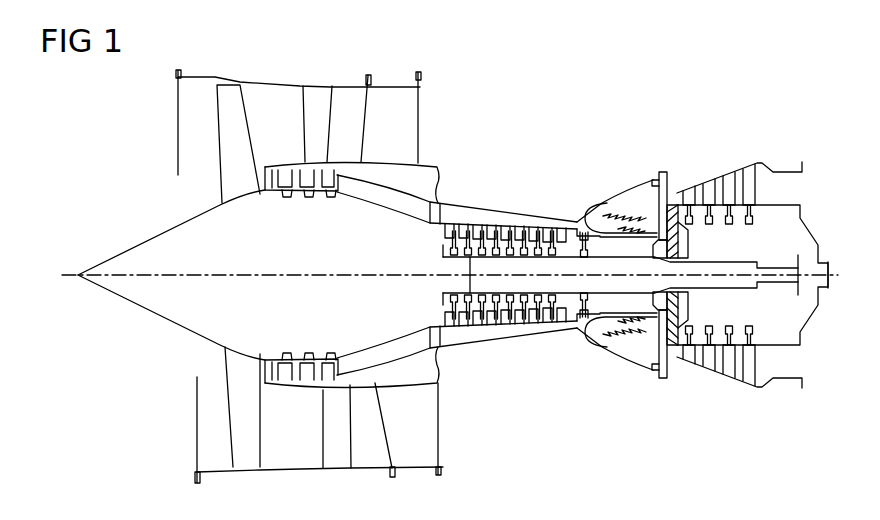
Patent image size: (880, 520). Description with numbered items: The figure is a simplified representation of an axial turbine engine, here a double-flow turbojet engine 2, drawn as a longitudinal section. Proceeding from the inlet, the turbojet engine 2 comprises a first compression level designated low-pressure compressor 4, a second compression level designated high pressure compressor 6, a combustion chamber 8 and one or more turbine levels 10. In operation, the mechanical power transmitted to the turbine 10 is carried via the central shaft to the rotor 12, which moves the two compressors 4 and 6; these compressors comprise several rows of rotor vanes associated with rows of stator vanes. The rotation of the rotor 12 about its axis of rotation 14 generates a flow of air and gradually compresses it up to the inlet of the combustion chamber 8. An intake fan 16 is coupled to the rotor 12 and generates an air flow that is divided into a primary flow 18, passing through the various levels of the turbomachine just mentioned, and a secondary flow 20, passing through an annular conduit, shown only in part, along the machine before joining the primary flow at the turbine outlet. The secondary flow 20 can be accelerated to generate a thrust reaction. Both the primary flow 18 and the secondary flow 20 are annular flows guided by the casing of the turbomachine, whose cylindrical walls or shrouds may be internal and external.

The turbojet engine 2 is at (609, 106).
The low-pressure compressor 4 is at (284, 196).
The high pressure compressor 6 is at (479, 210).
The combustion chamber 8 is at (602, 203).
The turbine 10 is at (733, 190).
The rotor 12 is at (151, 303).
The axis of rotation 14 is at (318, 280).
The intake fan 16 is at (233, 138).
The primary flow 18 is at (343, 183).
The secondary flow 20 is at (420, 115).